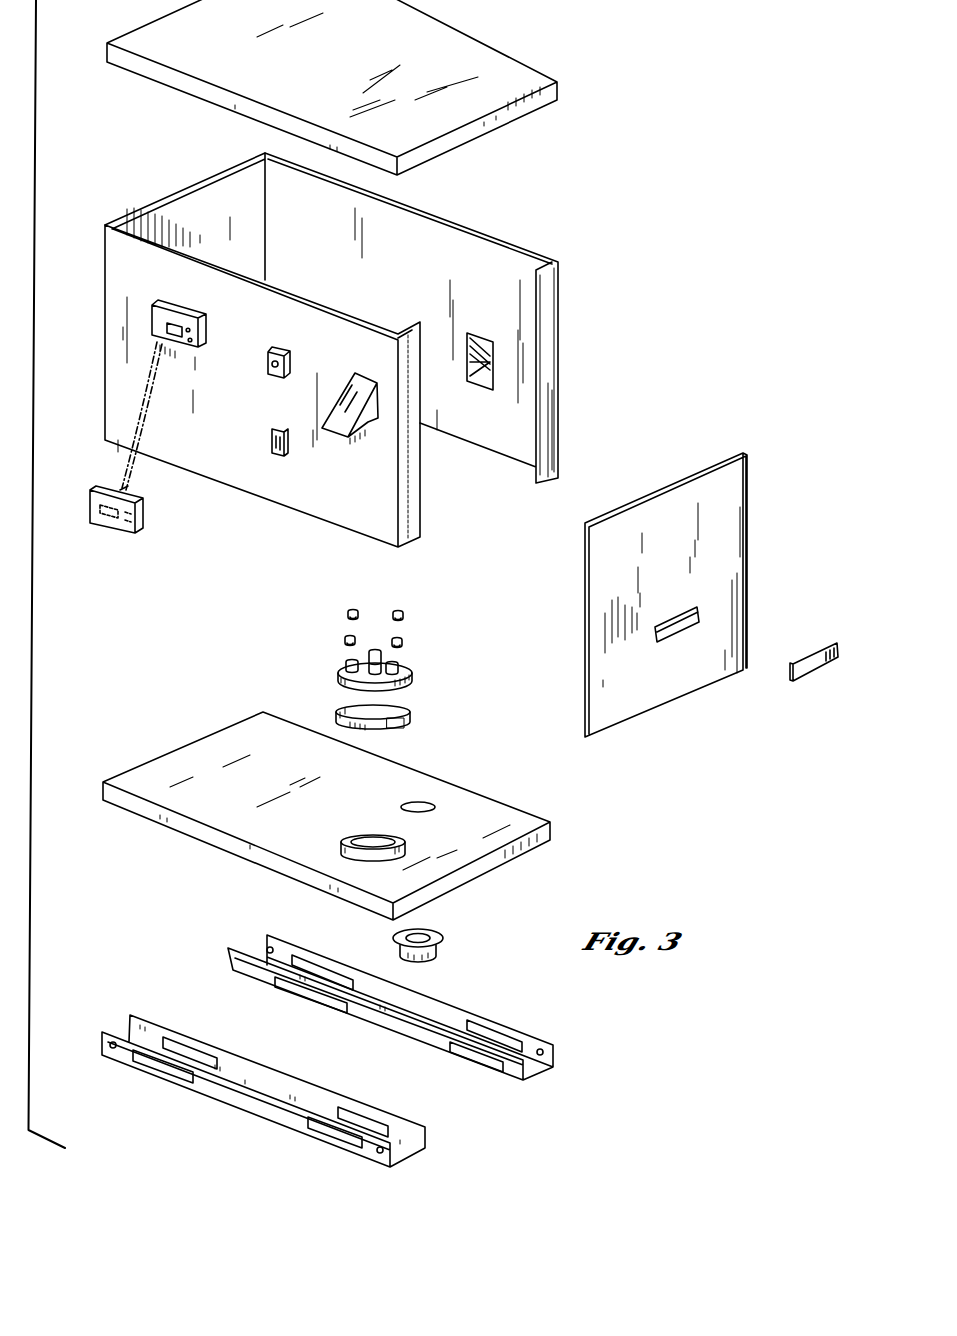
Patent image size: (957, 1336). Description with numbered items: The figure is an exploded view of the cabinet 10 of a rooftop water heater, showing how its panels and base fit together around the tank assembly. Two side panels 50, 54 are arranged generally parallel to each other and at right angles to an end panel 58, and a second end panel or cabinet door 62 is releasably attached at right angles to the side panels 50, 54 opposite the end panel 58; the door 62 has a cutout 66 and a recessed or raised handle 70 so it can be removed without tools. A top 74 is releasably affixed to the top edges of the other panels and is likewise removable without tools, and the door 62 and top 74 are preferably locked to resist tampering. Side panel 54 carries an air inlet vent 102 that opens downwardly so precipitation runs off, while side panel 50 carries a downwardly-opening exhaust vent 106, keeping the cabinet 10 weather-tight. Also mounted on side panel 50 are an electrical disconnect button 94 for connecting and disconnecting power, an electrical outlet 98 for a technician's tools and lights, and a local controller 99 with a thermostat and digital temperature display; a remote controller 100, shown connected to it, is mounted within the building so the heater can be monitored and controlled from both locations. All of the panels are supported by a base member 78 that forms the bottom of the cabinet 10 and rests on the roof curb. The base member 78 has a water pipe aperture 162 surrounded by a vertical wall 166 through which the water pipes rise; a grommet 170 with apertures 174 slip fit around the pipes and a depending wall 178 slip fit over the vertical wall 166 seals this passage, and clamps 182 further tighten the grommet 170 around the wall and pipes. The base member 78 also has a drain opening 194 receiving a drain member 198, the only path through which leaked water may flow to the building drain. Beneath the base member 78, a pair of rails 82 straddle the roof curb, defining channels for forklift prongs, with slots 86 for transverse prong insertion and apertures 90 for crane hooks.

The cabinet 10 is at (621, 215).
The top 74 is at (440, 44).
The end panel 58 is at (205, 190).
The side panel 54 is at (411, 318).
The side panel 50 is at (255, 386).
The local controller 99 is at (172, 300).
The electrical disconnect button 94 is at (287, 350).
The electrical outlet 98 is at (272, 438).
The exhaust vent 106 is at (348, 423).
The air inlet vent 102 is at (472, 381).
The remote controller 100 is at (147, 515).
The cabinet door 62 is at (641, 595).
The cutout 66 is at (660, 634).
The handle 70 is at (800, 682).
The clamps 182 is at (405, 612).
The apertures 174 is at (350, 666).
The depending wall 178 is at (340, 680).
The grommet 170 is at (392, 668).
The base member 78 is at (326, 815).
The drain opening 194 is at (425, 805).
The water pipe aperture 162 is at (397, 829).
The vertical wall 166 is at (404, 849).
The drain member 198 is at (440, 936).
The rails 82 is at (355, 1048).
The slots 86 is at (307, 967).
The apertures 90 is at (268, 947).